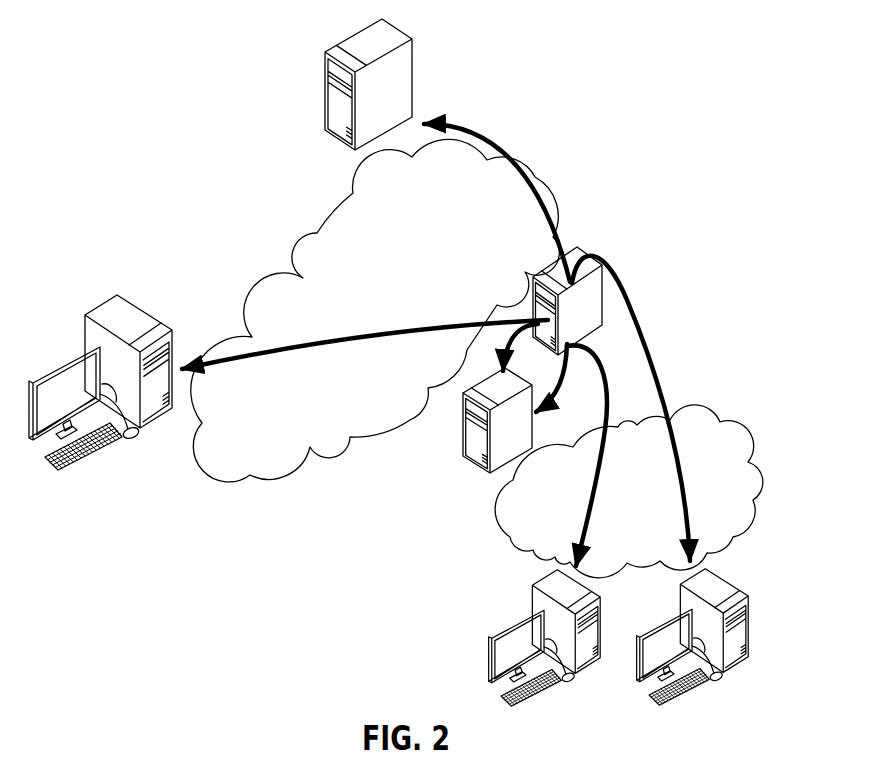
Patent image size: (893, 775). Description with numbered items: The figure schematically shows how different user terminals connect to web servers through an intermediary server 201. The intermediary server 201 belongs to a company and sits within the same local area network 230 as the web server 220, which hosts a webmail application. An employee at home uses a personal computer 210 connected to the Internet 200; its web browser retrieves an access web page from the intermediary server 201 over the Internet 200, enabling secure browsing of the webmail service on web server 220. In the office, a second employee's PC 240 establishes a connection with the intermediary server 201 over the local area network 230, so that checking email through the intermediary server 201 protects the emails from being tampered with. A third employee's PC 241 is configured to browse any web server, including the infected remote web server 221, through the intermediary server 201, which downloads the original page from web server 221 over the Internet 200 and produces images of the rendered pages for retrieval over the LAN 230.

The Internet 200 is at (248, 490).
The intermediary server 201 is at (598, 243).
The personal computer 210 is at (112, 288).
The web server 220 is at (472, 440).
The web server 221 is at (392, 83).
The local area network 230 is at (700, 392).
The PC 240 is at (481, 666).
The PC 241 is at (762, 640).